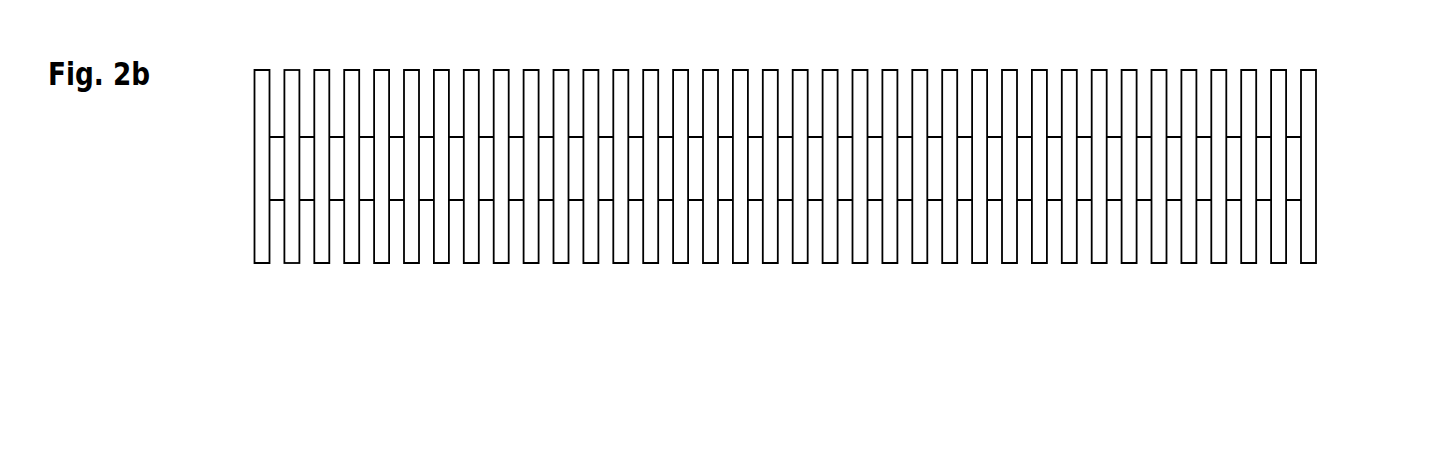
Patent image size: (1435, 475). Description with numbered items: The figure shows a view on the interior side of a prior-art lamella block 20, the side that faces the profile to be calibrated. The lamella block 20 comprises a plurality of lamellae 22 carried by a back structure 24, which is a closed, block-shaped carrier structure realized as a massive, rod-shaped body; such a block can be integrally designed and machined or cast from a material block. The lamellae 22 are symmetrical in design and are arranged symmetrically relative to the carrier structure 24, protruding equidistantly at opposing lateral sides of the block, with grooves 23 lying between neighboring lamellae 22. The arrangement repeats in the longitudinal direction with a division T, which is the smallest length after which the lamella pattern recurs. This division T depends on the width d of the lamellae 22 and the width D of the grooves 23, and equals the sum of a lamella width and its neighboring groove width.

The lamella block 20 is at (1338, 205).
The lamella 22 is at (292, 242).
The groove 23 is at (515, 238).
The back structure 24 is at (397, 168).
The width of the lamellae d is at (628, 68).
The width of the grooves D is at (673, 68).
The division T is at (613, 263).